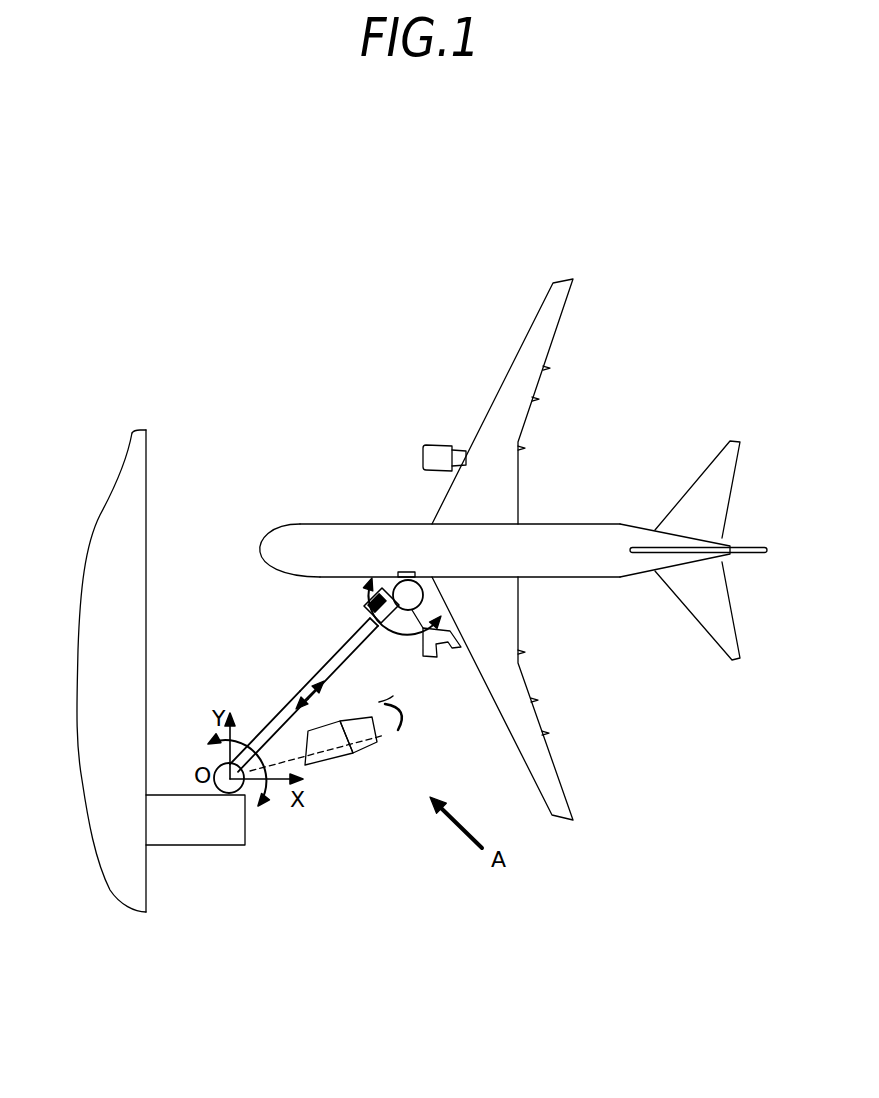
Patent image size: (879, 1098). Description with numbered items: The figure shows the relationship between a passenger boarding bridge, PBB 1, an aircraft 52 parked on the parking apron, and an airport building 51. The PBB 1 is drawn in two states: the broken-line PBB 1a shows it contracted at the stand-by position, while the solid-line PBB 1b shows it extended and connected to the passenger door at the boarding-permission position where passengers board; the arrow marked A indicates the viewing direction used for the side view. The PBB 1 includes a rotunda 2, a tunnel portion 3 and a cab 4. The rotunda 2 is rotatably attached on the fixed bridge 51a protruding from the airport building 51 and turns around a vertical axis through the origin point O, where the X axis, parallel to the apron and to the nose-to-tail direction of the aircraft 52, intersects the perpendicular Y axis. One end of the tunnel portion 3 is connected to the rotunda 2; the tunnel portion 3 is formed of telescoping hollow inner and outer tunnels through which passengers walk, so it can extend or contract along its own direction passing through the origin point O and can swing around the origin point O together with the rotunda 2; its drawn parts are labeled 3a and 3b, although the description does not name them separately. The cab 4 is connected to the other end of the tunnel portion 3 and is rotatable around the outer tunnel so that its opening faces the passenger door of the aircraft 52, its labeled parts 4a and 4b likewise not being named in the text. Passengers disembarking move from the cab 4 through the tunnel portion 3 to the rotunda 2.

The PBB 1 is at (369, 834).
The PBB in stand-by position 1a is at (362, 757).
The PBB in boarding-permission position 1b is at (311, 725).
The rotunda 2 is at (235, 789).
The tunnel portion 3 is at (286, 685).
The first arm portion 3a is at (282, 709).
The second arm portion 3b is at (322, 664).
The cab 4 is at (424, 659).
The hand 4a is at (415, 713).
The wrist joint 4b is at (437, 650).
The airport building 51 is at (127, 597).
The fixed bridge 51a is at (202, 834).
The aircraft 52 is at (343, 532).